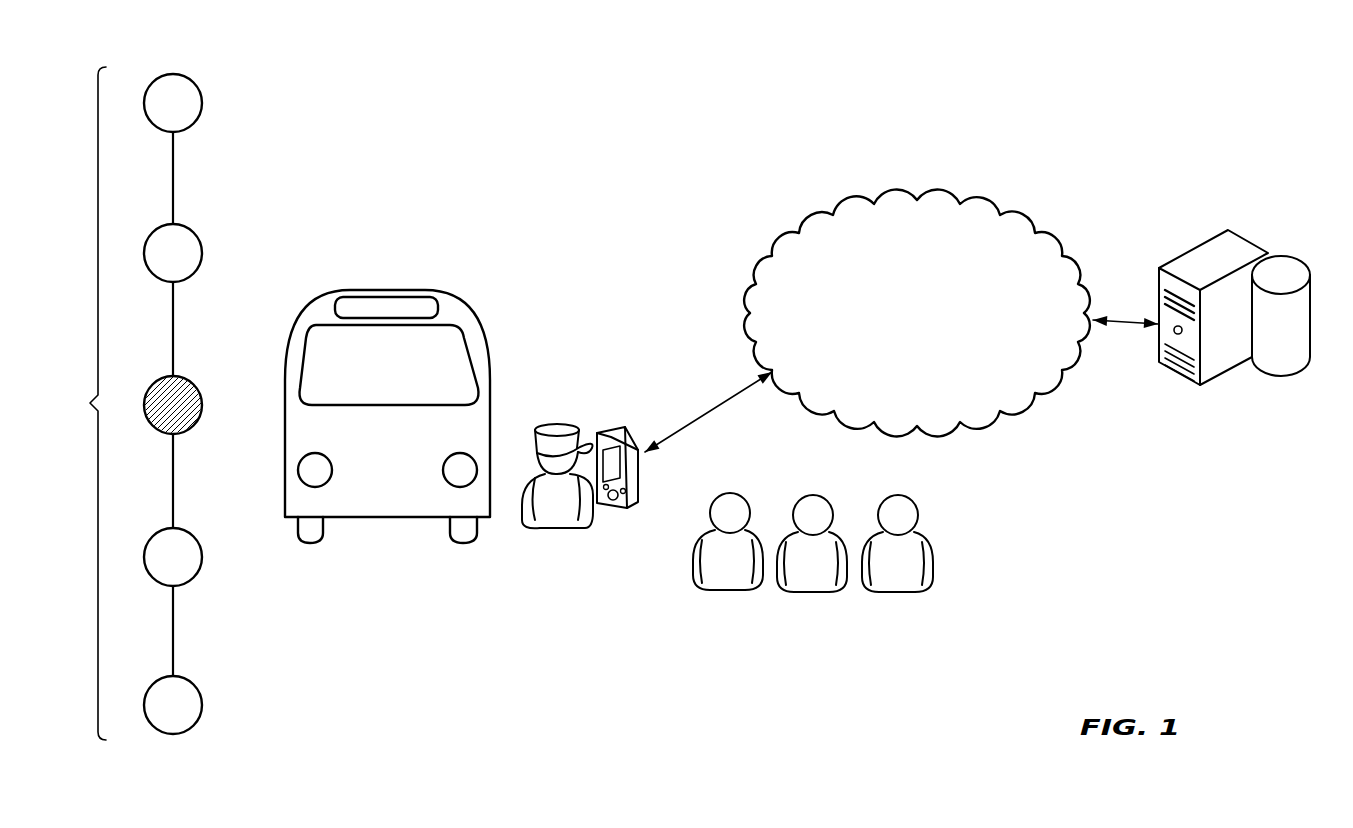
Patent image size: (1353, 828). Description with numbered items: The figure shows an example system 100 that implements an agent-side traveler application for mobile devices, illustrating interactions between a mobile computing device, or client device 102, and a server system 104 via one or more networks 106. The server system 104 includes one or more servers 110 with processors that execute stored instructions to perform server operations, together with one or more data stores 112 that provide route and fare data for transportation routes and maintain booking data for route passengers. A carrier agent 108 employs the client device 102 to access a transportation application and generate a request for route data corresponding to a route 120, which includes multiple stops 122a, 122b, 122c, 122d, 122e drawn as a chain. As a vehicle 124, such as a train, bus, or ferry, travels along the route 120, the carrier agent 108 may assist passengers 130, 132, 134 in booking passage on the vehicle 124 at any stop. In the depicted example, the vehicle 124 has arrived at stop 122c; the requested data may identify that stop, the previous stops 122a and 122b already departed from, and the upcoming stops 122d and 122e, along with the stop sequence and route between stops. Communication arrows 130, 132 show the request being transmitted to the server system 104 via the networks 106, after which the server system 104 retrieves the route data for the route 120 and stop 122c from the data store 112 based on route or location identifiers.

The system 100 is at (1098, 112).
The mobile computing device 102 is at (615, 428).
The server system 104 is at (1176, 420).
The networks 106 is at (996, 205).
The carrier agent 108 is at (557, 420).
The servers 110 is at (1247, 236).
The data stores 112 is at (1281, 378).
The route 120 is at (161, 394).
The stop 122a is at (195, 82).
The stop 122b is at (195, 232).
The stop 122c is at (195, 384).
The stop 122d is at (195, 536).
The stop 122e is at (195, 684).
The vehicle 124 is at (428, 290).
The passenger / communication arrow 130 is at (740, 390).
The passenger / communication arrow 132 is at (1124, 318).
The passenger 134 is at (890, 499).